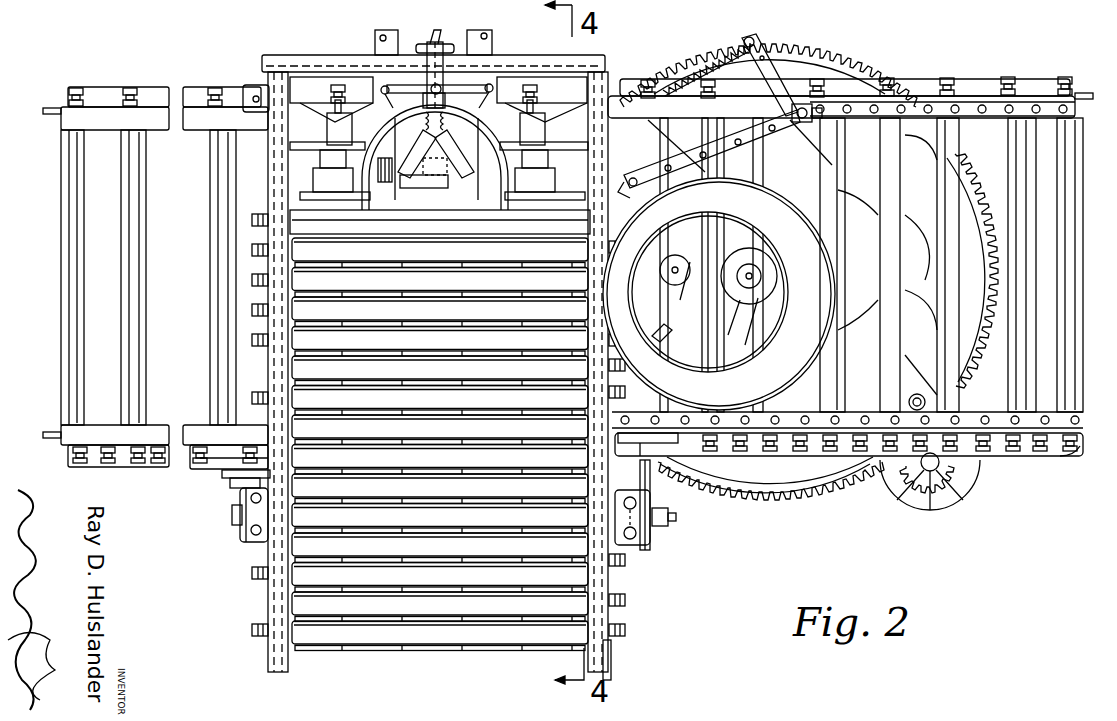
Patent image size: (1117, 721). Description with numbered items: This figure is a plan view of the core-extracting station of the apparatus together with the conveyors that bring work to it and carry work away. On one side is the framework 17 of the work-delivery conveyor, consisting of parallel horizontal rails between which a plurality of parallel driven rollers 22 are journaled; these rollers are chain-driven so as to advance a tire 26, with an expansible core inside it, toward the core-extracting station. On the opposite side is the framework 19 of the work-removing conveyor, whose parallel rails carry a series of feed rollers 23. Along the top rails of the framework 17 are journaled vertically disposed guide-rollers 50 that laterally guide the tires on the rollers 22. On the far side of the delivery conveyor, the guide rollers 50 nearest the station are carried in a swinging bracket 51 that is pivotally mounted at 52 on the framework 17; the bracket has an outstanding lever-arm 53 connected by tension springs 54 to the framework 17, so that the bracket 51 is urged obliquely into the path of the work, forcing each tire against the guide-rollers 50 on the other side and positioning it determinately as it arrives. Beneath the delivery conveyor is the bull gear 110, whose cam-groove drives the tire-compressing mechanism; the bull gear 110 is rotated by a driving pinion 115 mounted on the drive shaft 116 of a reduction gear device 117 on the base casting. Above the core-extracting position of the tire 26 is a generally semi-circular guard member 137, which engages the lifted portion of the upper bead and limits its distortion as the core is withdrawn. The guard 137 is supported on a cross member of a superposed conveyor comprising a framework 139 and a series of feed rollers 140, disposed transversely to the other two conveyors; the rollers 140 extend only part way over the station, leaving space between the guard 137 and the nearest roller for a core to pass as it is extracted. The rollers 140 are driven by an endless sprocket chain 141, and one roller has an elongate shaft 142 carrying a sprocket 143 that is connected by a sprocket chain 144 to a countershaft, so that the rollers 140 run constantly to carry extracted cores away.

The framework of work-delivery conveyor 17 is at (1028, 80).
The framework of work-removing conveyor 19 is at (110, 97).
The driven rollers 22 is at (1010, 200).
The feed rollers 23 is at (72, 226).
The tire 26 is at (800, 240).
The guide-rollers 50 is at (745, 160).
The swinging bracket 51 is at (628, 180).
The pivot 52 is at (804, 122).
The lever-arm 53 is at (770, 60).
The tension springs 54 is at (734, 50).
The bull gear 110 is at (790, 498).
The driving pinion 115 is at (932, 505).
The drive shaft 116 is at (925, 498).
The reduction gear device 117 is at (972, 478).
The guard member 137 is at (545, 145).
The framework of superposed conveyor 139 is at (264, 88).
The feed rollers 140 is at (442, 226).
The endless sprocket chain 141 is at (620, 648).
The elongate shaft 142 is at (670, 518).
The sprocket 143 is at (650, 535).
The sprocket chain 144 is at (648, 560).